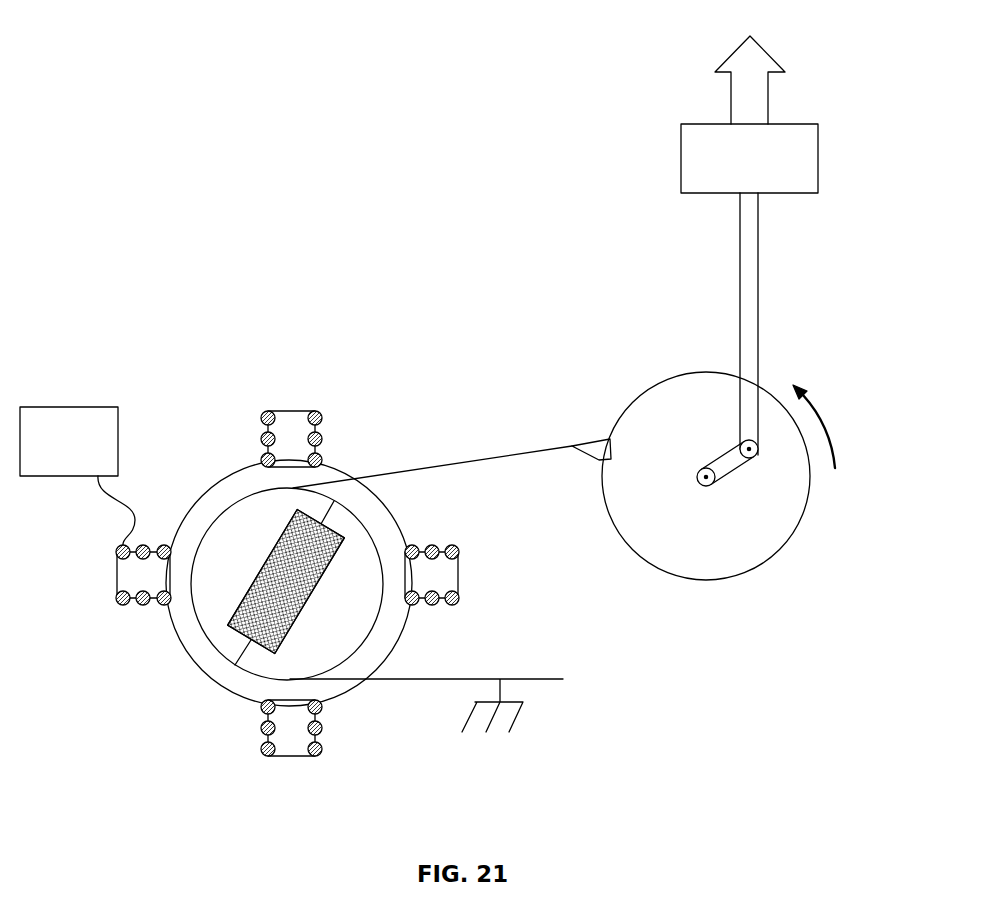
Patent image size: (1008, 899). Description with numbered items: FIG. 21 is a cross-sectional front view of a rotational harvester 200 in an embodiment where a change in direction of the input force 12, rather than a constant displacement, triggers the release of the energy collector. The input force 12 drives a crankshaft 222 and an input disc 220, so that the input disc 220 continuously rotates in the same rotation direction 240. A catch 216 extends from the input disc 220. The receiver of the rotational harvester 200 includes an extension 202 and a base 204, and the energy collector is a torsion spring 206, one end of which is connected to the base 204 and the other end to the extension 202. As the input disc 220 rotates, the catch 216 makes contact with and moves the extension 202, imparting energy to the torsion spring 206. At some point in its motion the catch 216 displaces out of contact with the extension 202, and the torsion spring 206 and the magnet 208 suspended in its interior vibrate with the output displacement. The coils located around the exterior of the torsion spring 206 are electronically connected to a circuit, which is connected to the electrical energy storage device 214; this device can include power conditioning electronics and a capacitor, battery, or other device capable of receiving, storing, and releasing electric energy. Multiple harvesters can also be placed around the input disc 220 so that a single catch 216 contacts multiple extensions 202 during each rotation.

The rotational harvester 200 is at (213, 100).
The input force 12 is at (691, 147).
The crankshaft 222 is at (752, 287).
The input disc 220 is at (647, 547).
The rotation direction 240 is at (826, 423).
The catch 216 is at (601, 441).
The extension 202 is at (492, 460).
The base 204 is at (538, 679).
The torsion spring 206 is at (200, 630).
The magnet 208 is at (270, 572).
The electrical energy storage device 214 is at (83, 407).